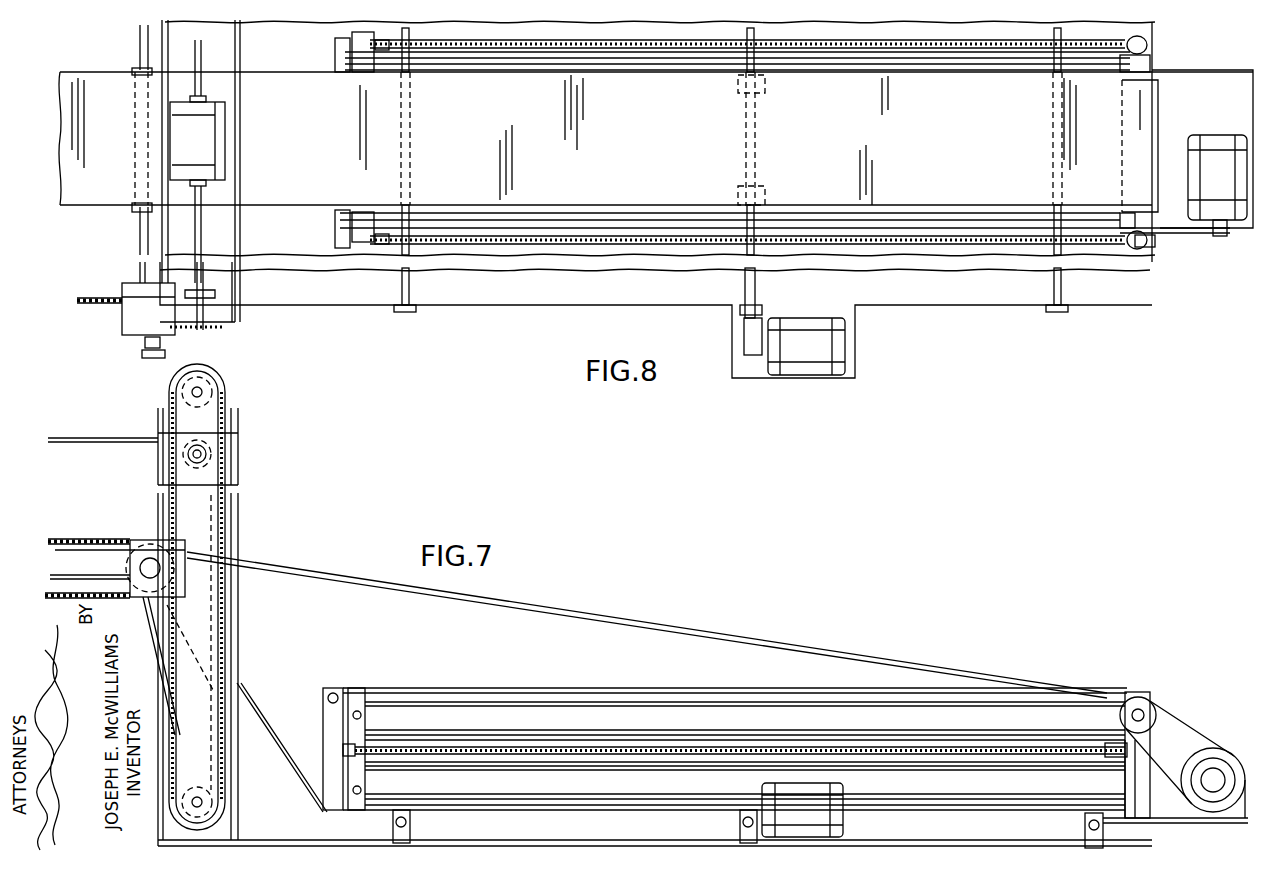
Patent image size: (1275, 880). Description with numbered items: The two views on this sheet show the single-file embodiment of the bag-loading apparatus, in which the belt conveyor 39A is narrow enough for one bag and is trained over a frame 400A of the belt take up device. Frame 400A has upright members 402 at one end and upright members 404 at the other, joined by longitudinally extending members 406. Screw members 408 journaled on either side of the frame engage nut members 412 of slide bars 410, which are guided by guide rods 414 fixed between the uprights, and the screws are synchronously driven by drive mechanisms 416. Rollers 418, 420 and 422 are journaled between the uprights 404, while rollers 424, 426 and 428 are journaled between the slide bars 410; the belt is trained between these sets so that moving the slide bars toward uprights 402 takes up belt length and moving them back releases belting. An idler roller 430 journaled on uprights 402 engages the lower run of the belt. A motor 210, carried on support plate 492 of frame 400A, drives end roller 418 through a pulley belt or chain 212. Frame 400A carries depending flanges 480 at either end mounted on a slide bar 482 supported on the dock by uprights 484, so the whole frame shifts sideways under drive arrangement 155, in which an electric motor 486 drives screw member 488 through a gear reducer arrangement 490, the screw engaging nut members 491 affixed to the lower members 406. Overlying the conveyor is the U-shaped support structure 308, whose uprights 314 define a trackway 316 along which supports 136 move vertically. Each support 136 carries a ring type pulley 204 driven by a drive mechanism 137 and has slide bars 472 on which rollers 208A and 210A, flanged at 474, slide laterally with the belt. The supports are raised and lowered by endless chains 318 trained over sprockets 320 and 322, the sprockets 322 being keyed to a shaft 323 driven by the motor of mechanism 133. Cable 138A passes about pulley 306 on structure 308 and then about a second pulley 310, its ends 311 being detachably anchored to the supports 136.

In FIG. 7, the belt conveyor 39A is at (895, 660).
In FIG. 8, the mechanism 133 is at (215, 152).
In FIG. 7, the supports 136 is at (186, 550).
In FIG. 8, the drive mechanisms 137 is at (139, 350).
In FIG. 8, the cable 138A is at (100, 300).
In FIG. 8, the drive arrangement 155 is at (766, 392).
In FIG. 7, the drive arrangement 155 is at (853, 793).
In FIG. 8, the ring type pulley 204 is at (122, 306).
In FIG. 8, the roller 208A is at (136, 68).
In FIG. 7, the roller 208A is at (125, 545).
In FIG. 8, the motor 210 is at (1215, 150).
In FIG. 7, the motor 210 is at (1225, 762).
In FIG. 7, the roller 210A is at (102, 540).
In FIG. 8, the pulley belt or chain 212 is at (1231, 249).
In FIG. 7, the pulley belt or chain 212 is at (1187, 740).
In FIG. 7, the pulley 306 is at (248, 433).
In FIG. 8, the U-shaped support structure 308 is at (243, 315).
In FIG. 7, the U-shaped support structure 308 is at (244, 462).
In FIG. 7, the second pulley 310 is at (238, 826).
In FIG. 7, the cable ends 311 is at (147, 605).
In FIG. 7, the uprights 314 is at (240, 520).
In FIG. 7, the trackway 316 is at (170, 535).
In FIG. 7, the endless chains 318 is at (222, 458).
In FIG. 7, the sprocket 320 is at (220, 395).
In FIG. 7, the sprocket 322 is at (218, 795).
In FIG. 8, the shaft 323 is at (205, 206).
In FIG. 7, the frame 400A is at (990, 693).
In FIG. 8, the upright members 402 is at (340, 250).
In FIG. 7, the upright members 402 is at (323, 715).
In FIG. 7, the upright members 404 is at (1147, 693).
In FIG. 8, the longitudinally extending members 406 is at (737, 61).
In FIG. 7, the longitudinally extending members 406 is at (465, 690).
In FIG. 8, the screw members 408 is at (1048, 50).
In FIG. 7, the screw members 408 is at (517, 748).
In FIG. 8, the slide bars 410 is at (354, 244).
In FIG. 7, the slide bars 410 is at (362, 690).
In FIG. 8, the nut members 412 is at (388, 238).
In FIG. 7, the nut members 412 is at (378, 730).
In FIG. 7, the guide rods 414 is at (616, 692).
In FIG. 8, the drive mechanisms 416 is at (1156, 247).
In FIG. 7, the drive mechanisms 416 is at (1158, 797).
In FIG. 8, the roller 418 is at (1145, 97).
In FIG. 7, the roller 418 is at (1130, 696).
In FIG. 7, the roller 420 is at (1153, 747).
In FIG. 7, the roller 422 is at (1127, 797).
In FIG. 7, the roller 424 is at (380, 712).
In FIG. 7, the roller 426 is at (385, 752).
In FIG. 7, the roller 428 is at (370, 795).
In FIG. 7, the idler roller 430 is at (338, 688).
In FIG. 8, the slide bars 472 is at (138, 243).
In FIG. 7, the slide bars 472 is at (140, 540).
In FIG. 8, the flanges 474 is at (133, 208).
In FIG. 7, the depending flanges 480 is at (390, 820).
In FIG. 8, the slide bar 482 is at (414, 288).
In FIG. 8, the uprights 484 is at (414, 312).
In FIG. 7, the uprights 484 is at (412, 832).
In FIG. 8, the motor 486 is at (818, 375).
In FIG. 8, the screw member 488 is at (756, 290).
In FIG. 8, the gear reducer arrangement 490 is at (750, 355).
In FIG. 8, the nut members 491 is at (770, 86).
In FIG. 7, the support plate 492 is at (1230, 822).